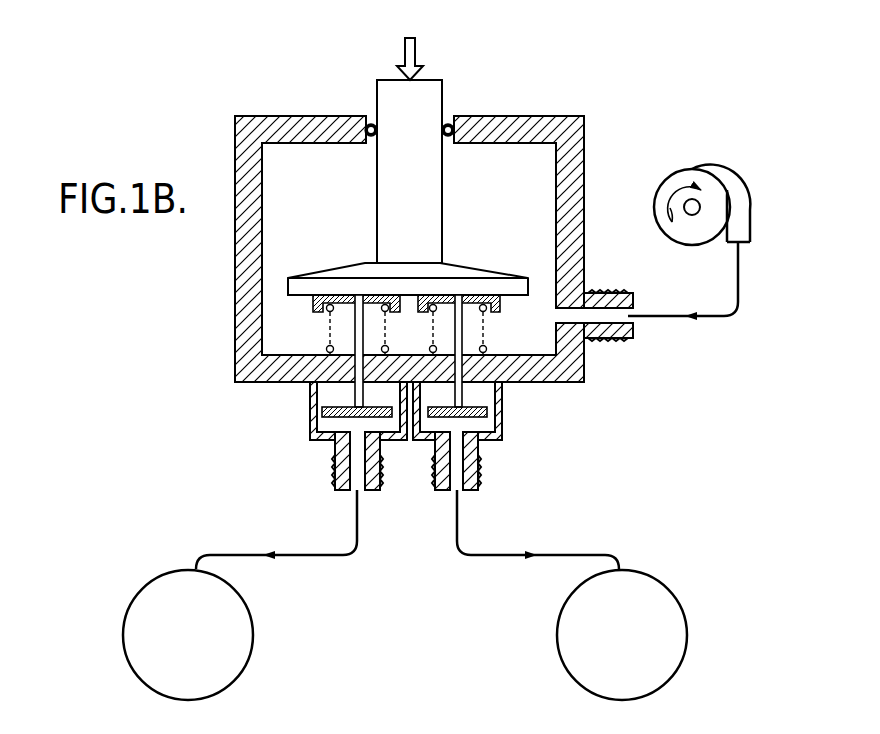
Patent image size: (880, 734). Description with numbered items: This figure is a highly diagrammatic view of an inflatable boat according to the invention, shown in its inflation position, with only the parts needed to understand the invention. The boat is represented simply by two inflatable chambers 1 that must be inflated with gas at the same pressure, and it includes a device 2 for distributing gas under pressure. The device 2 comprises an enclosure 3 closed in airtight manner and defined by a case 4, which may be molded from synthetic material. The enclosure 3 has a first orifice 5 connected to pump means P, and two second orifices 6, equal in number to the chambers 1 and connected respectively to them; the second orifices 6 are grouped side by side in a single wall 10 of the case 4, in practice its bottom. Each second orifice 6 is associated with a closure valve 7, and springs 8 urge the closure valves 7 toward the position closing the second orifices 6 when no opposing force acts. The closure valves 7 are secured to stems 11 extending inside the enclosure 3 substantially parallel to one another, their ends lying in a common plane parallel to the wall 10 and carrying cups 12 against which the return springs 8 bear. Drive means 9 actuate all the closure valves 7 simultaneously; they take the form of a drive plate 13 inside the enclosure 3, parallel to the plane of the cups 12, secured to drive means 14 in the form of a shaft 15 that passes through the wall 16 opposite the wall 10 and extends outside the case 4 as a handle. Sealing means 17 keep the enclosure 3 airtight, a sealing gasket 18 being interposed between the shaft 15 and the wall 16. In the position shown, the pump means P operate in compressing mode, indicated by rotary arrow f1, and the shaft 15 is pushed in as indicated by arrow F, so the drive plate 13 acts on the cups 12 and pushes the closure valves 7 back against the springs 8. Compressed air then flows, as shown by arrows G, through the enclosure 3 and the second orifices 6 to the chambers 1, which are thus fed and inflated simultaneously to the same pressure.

The inflatable chamber 1 is at (160, 575).
The device for distributing gas under pressure 2 is at (403, 220).
The enclosure 3 is at (345, 180).
The case 4 is at (237, 168).
The first orifice 5 is at (578, 313).
The second orifice 6 is at (372, 392).
The closure valve 7 is at (333, 440).
The spring 8 is at (330, 320).
The drive means 9 is at (414, 159).
The wall 10 is at (265, 370).
The stem 11 is at (355, 403).
The cup 12 is at (450, 298).
The drive plate 13 is at (300, 285).
The drive means 14 is at (450, 85).
The shaft 15 is at (397, 100).
The wall 16 is at (540, 135).
The sealing means 17 is at (458, 122).
The sealing gasket 18 is at (367, 120).
The arrow F is at (415, 47).
The arrows G is at (697, 320).
The pump means P is at (705, 170).
The rotary arrow f1 is at (680, 200).